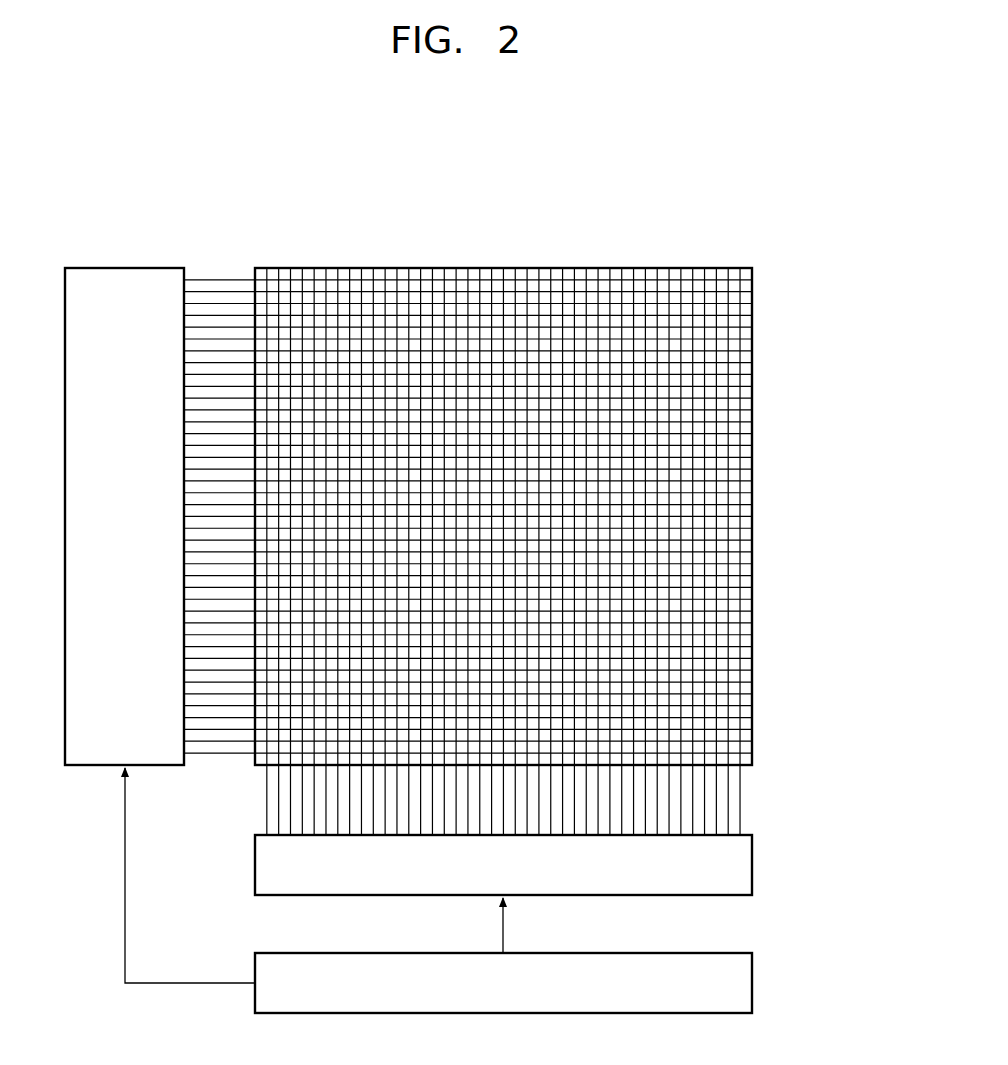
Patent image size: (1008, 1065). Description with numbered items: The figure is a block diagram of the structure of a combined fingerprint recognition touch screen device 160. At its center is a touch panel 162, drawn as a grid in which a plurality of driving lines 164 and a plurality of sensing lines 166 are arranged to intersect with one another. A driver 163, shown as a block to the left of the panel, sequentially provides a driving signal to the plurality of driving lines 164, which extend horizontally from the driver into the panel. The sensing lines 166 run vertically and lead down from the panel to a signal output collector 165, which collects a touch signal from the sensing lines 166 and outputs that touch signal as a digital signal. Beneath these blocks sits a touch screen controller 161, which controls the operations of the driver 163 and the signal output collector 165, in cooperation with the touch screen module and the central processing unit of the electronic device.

The combined fingerprint recognition touch screen device 160 is at (729, 247).
The touch screen controller 161 is at (752, 983).
The touch panel 162 is at (752, 395).
The driver 163 is at (125, 266).
The driving lines 164 is at (222, 278).
The signal output collector 165 is at (752, 868).
The sensing lines 166 is at (741, 800).